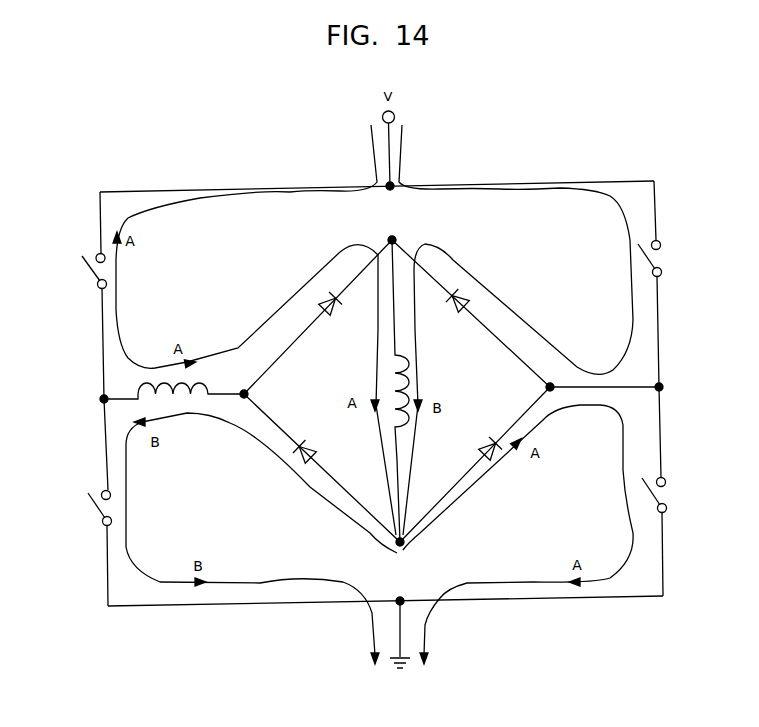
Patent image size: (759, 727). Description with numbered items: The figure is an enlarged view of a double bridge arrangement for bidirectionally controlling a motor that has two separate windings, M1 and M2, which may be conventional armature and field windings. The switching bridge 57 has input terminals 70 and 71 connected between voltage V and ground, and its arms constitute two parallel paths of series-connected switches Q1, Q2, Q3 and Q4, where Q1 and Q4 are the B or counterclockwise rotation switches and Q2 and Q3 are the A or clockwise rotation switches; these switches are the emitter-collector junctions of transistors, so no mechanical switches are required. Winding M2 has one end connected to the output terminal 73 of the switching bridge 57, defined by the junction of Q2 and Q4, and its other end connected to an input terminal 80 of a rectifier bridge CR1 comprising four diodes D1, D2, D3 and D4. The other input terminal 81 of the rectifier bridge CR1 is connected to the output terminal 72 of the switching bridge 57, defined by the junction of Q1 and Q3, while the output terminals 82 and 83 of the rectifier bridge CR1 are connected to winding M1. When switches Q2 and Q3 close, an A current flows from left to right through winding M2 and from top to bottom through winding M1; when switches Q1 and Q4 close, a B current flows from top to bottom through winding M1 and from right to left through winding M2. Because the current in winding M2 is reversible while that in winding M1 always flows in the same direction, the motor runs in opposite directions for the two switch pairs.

The switching bridge 57 is at (551, 184).
The switching bridge input terminal 70 is at (388, 190).
The switching bridge input terminal 71 is at (399, 598).
The switching bridge output terminal 72 is at (663, 387).
The switching bridge output terminal 73 is at (100, 399).
The rectifier bridge input terminal 80 is at (248, 394).
The rectifier bridge input terminal 81 is at (546, 387).
The rectifier bridge output terminal 82 is at (404, 548).
The rectifier bridge output terminal 83 is at (396, 236).
The switch Q1 is at (686, 259).
The switch Q2 is at (62, 271).
The switch Q3 is at (693, 495).
The switch Q4 is at (67, 508).
The diode D1 is at (455, 306).
The diode D2 is at (336, 308).
The diode D3 is at (480, 452).
The diode D4 is at (316, 454).
The motor winding M1 is at (408, 378).
The motor winding M2 is at (138, 385).
The rectifier bridge CR1 is at (516, 330).